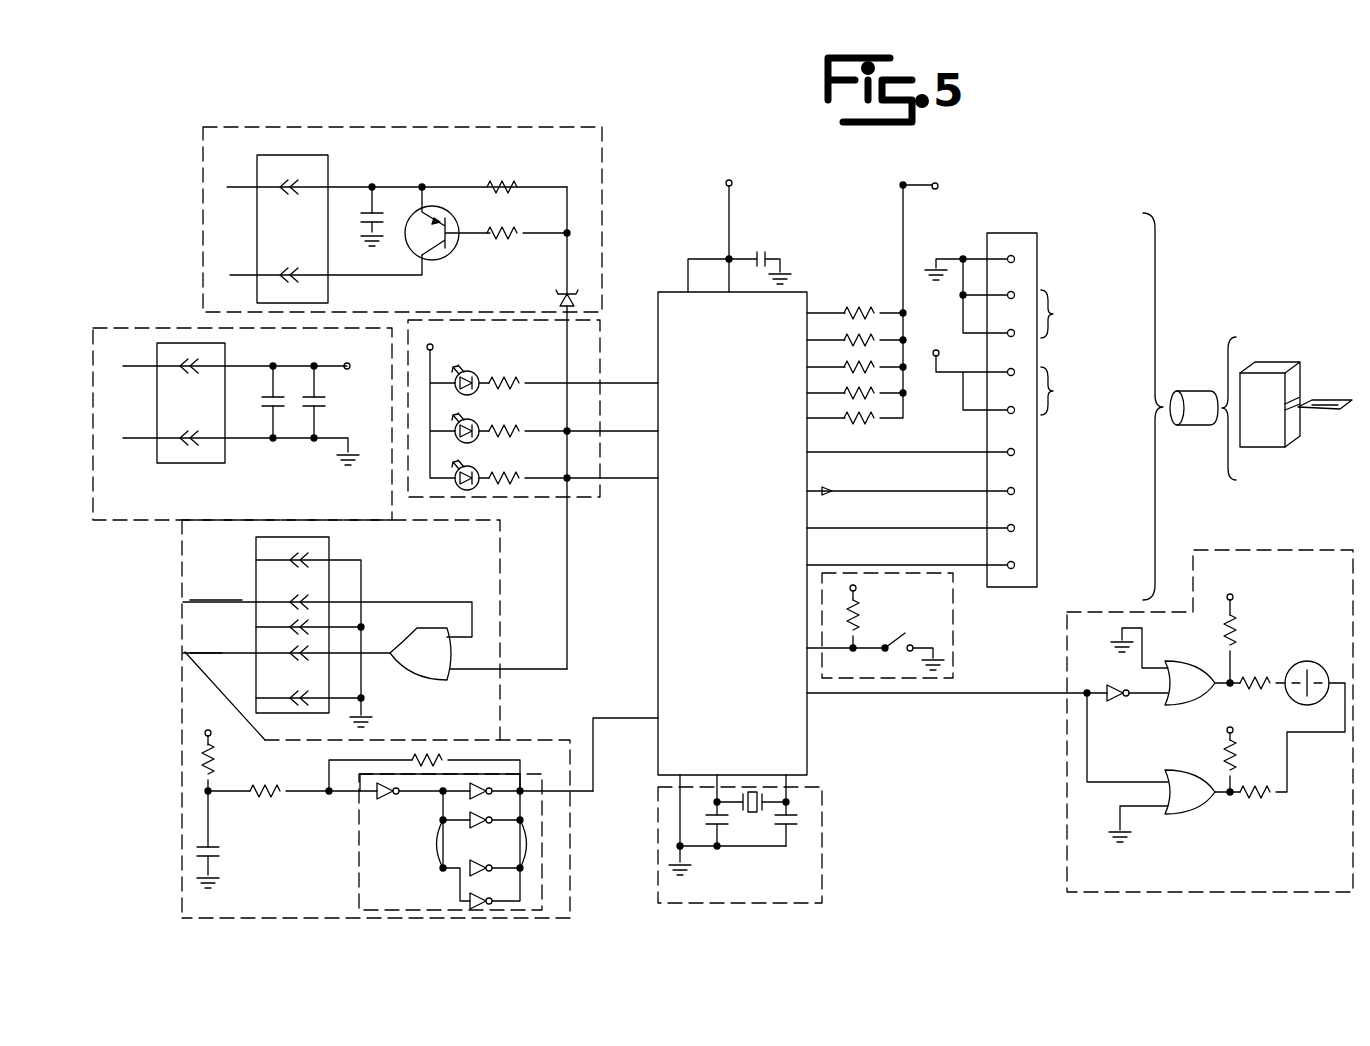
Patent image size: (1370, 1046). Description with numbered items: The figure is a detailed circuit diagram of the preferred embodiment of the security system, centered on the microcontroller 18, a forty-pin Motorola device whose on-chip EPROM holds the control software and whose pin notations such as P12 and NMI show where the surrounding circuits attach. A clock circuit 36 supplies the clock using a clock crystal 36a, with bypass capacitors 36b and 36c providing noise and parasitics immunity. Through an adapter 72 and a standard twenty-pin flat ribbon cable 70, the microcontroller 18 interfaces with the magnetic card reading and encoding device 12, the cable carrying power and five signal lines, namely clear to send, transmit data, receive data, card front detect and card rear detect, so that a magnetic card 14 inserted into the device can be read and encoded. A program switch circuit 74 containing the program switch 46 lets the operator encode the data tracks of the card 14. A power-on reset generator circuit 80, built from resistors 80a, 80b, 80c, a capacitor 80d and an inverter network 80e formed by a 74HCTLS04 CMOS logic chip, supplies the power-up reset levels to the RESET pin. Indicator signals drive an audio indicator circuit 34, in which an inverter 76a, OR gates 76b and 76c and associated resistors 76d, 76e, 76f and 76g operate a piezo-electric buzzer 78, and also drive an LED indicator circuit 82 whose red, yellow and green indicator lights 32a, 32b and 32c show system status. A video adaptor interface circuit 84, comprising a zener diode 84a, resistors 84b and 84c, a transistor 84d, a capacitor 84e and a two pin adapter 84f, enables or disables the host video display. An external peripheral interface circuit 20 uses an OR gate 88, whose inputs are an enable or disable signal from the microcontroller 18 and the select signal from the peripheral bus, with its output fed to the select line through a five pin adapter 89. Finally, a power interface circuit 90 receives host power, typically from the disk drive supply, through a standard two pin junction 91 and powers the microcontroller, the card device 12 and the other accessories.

The magnetic card reading and encoding device 12 is at (1272, 362).
The magnetic card 14 is at (1335, 400).
The microcontroller 18 is at (724, 608).
The external peripheral interface circuit 20 is at (183, 590).
The red indicator light 32a is at (480, 468).
The yellow indicator light 32b is at (480, 420).
The green indicator light 32c is at (480, 372).
The audio indicator circuit 34 is at (1067, 770).
The clock circuit 36 is at (658, 876).
The clock crystal 36a is at (752, 812).
The bypass capacitor 36b is at (712, 828).
The bypass capacitor 36c is at (792, 828).
The program switch 46 is at (893, 635).
The flat ribbon cable 70 is at (1192, 391).
The adapter 72 is at (1020, 233).
The program switch circuit 74 is at (953, 633).
The inverter 76a is at (1126, 698).
The OR gate 76b is at (1190, 662).
The OR gate 76c is at (1190, 815).
The resistor 76d is at (1236, 632).
The resistor 76e is at (1262, 678).
The resistor 76f is at (1236, 762).
The resistor 76g is at (1262, 800).
The piezo-electric buzzer 78 is at (1320, 660).
The power-on reset generator circuit 80 is at (182, 832).
The resistor 80a is at (215, 765).
The resistor 80b is at (280, 786).
The resistor 80c is at (440, 755).
The capacitor 80d is at (218, 860).
The inverter network 80e is at (359, 842).
The LED indicator circuit 82 is at (600, 452).
The video adaptor interface circuit 84 is at (602, 160).
The zener diode 84a is at (560, 298).
The resistor 84b is at (503, 182).
The resistor 84c is at (508, 228).
The transistor 84d is at (466, 216).
The capacitor 84e is at (376, 205).
The two pin adapter 84f is at (328, 172).
The OR gate 88 is at (440, 682).
The five pin adapter 89 is at (329, 542).
The power interface circuit 90 is at (167, 320).
The two pin junction 91 is at (157, 397).